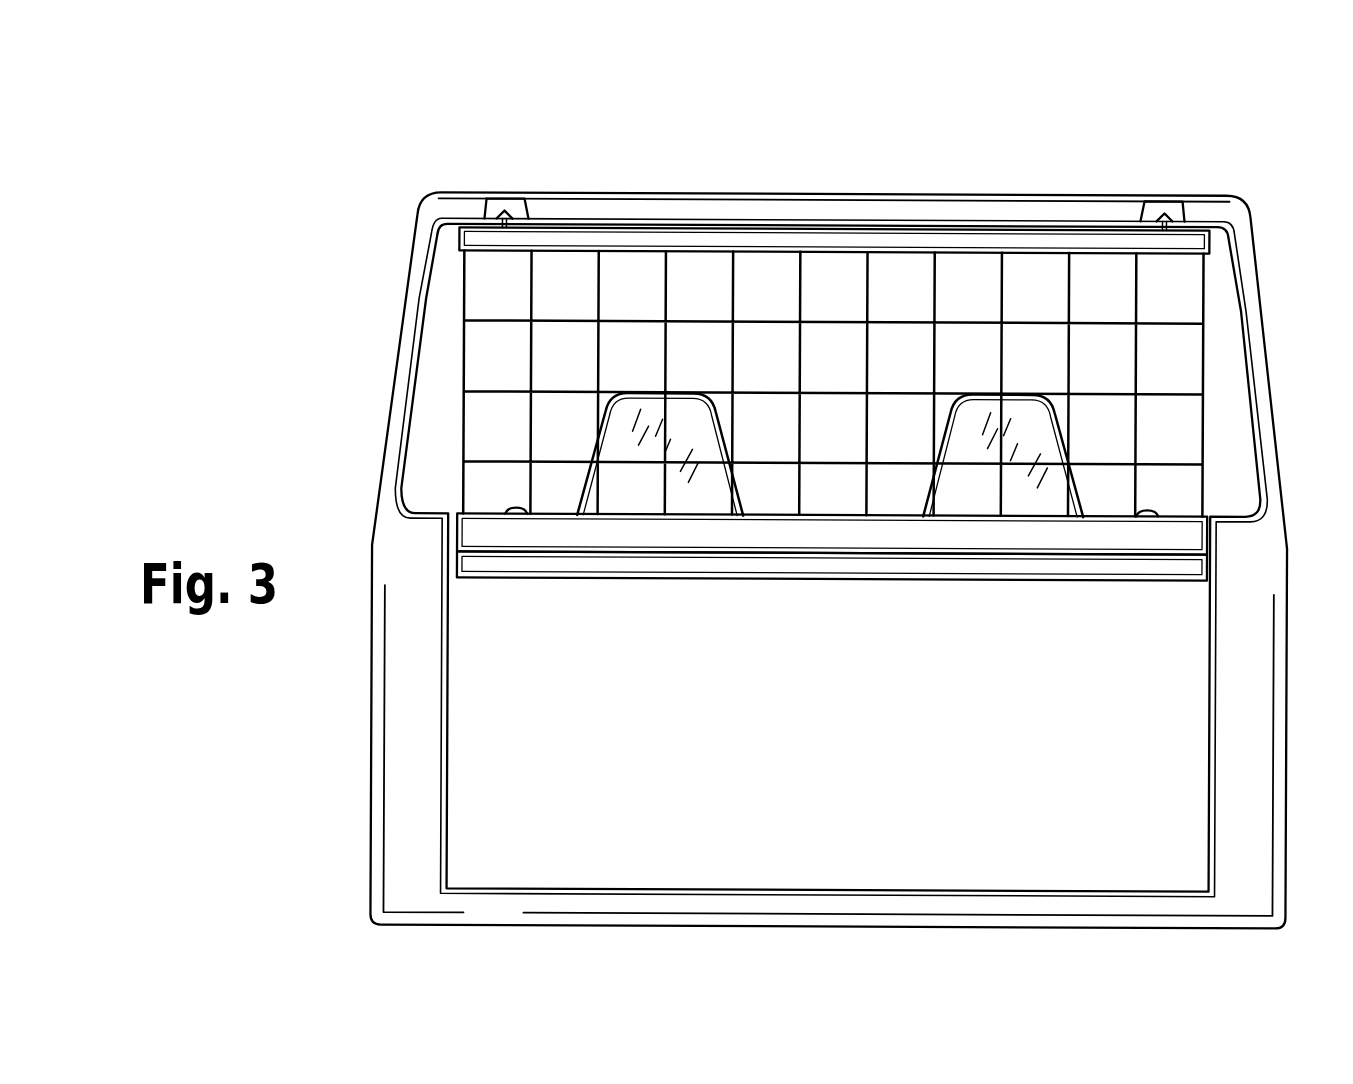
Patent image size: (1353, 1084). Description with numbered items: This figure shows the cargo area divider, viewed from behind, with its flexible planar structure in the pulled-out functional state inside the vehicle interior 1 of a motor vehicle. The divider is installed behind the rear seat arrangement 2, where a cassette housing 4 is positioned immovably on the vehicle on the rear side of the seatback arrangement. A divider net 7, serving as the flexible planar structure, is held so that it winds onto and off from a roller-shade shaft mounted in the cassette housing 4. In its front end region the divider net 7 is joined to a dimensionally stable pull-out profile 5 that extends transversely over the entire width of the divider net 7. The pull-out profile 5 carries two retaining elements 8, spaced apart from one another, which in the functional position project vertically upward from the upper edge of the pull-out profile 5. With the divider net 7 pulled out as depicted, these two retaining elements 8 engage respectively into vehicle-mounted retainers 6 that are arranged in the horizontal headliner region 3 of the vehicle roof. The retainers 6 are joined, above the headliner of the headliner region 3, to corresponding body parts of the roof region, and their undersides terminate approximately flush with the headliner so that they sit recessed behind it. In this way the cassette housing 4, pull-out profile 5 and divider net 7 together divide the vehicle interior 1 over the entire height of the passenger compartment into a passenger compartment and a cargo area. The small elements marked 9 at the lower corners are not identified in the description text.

The vehicle interior 1 is at (1226, 410).
The rear seat arrangement 2 is at (826, 755).
The headliner region 3 is at (742, 222).
The cassette housing 4 is at (1013, 538).
The pull-out profile 5 is at (838, 235).
The retainer 6 is at (470, 207).
The divider net 7 is at (865, 442).
The retaining element 8 is at (503, 224).
The support foot 9 is at (520, 508).